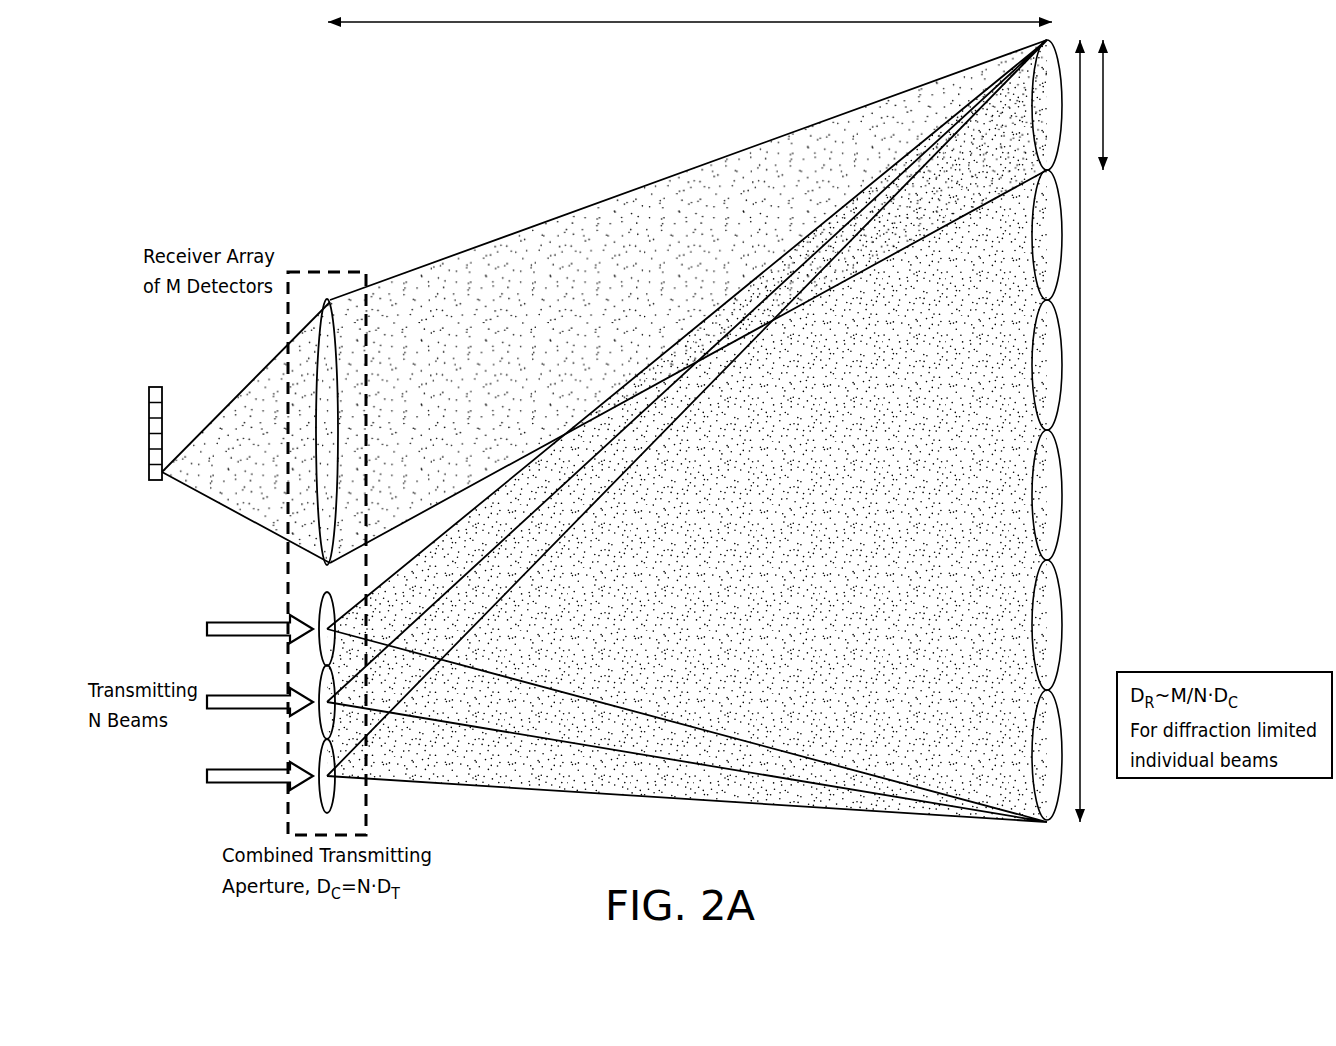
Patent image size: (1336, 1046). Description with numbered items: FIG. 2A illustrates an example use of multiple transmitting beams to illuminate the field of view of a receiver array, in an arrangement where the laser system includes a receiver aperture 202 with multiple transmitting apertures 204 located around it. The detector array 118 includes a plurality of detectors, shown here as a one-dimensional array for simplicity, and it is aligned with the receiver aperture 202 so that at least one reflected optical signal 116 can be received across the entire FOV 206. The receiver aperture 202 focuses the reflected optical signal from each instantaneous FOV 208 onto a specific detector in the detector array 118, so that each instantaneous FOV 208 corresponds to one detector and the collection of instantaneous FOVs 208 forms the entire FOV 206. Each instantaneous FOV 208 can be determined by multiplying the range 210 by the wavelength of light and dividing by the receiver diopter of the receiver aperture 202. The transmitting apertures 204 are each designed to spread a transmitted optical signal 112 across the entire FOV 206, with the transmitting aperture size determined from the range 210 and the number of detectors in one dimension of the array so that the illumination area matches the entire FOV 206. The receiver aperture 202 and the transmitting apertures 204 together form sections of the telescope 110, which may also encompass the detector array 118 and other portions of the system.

The telescope 110 is at (323, 262).
The transmitted optical signal 112 is at (681, 812).
The reflected optical signal 116 is at (613, 185).
The detector array 118 is at (150, 495).
The receiver aperture 202 is at (306, 506).
The transmitting apertures 204 is at (346, 803).
The entire field of view 206 is at (1097, 341).
The instantaneous field of view 208 is at (1066, 36).
The range 210 is at (775, 32).